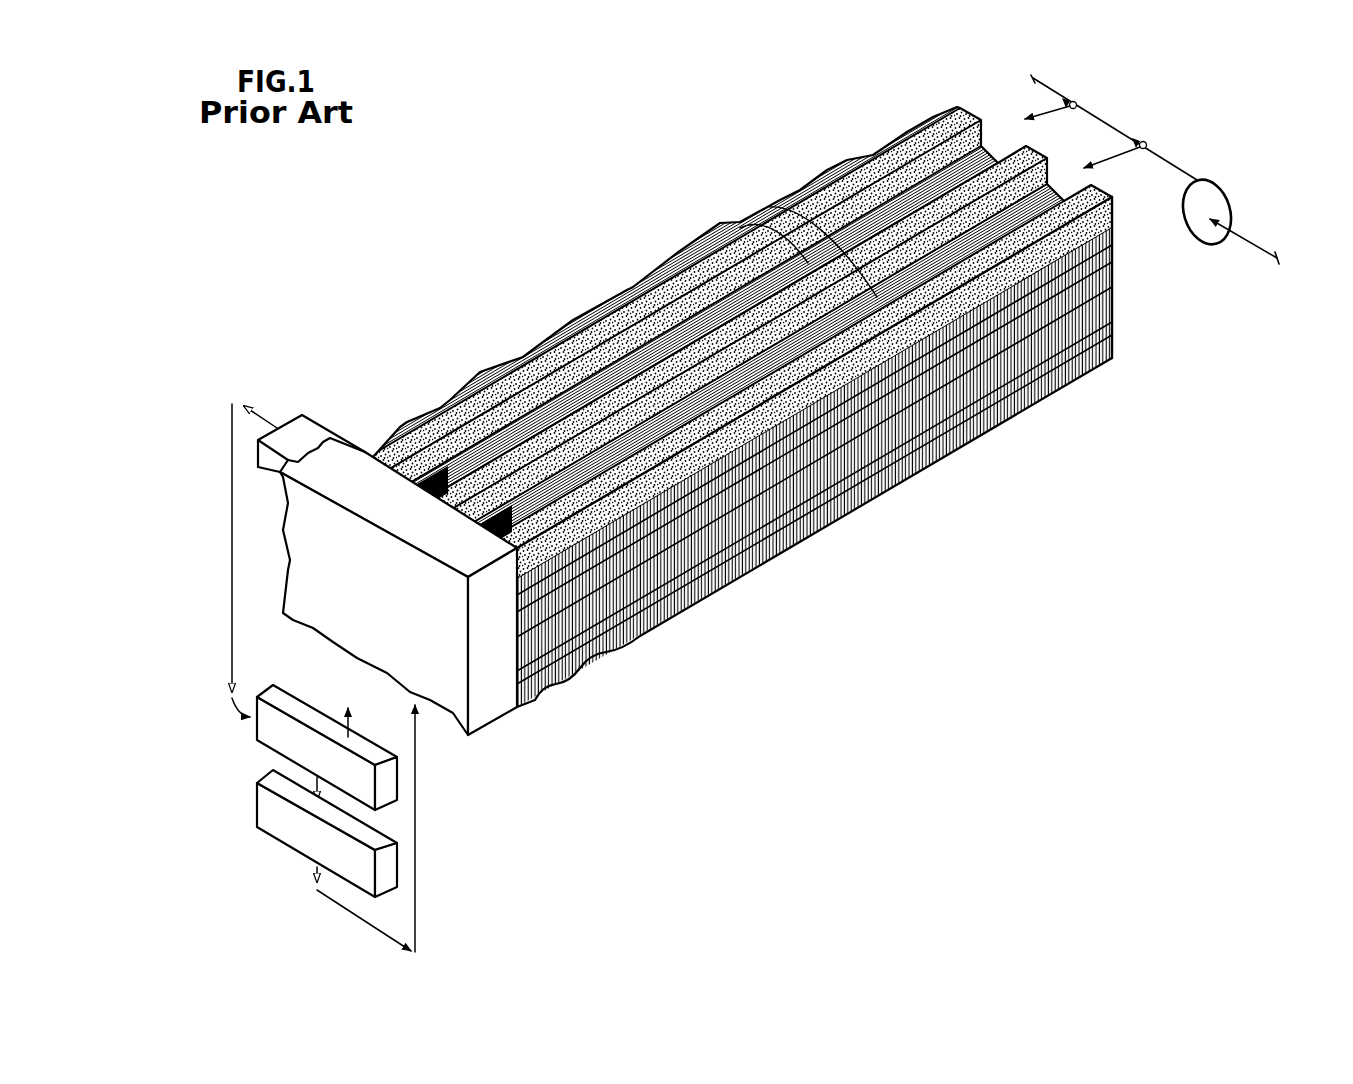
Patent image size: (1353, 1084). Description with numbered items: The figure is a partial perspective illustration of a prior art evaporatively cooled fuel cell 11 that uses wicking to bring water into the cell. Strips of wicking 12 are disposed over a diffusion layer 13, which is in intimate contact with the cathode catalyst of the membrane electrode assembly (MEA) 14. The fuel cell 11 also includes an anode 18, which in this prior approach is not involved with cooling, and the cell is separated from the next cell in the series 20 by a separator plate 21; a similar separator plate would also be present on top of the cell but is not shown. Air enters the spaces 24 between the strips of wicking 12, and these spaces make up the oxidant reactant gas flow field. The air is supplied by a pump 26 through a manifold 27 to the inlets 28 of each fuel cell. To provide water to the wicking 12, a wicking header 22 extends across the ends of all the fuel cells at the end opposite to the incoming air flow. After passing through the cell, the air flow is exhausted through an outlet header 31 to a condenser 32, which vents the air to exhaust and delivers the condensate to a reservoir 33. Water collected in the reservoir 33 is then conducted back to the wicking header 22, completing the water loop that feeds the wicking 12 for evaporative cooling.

The fuel cell 11 is at (765, 367).
The wicking 12 is at (943, 202).
The diffusion layer 13 is at (1097, 246).
The membrane electrode assembly (MEA) 14 is at (1097, 273).
The anode 18 is at (1107, 312).
The next cell in the series 20 is at (1107, 358).
The separator plate 21 is at (1107, 341).
The wicking header 22 is at (488, 686).
The spaces 24 is at (740, 228).
The pump 26 is at (1209, 193).
The manifold 27 is at (1104, 120).
The inlets 28 is at (1112, 157).
The outlet header 31 is at (316, 430).
The condenser 32 is at (298, 702).
The reservoir 33 is at (283, 788).